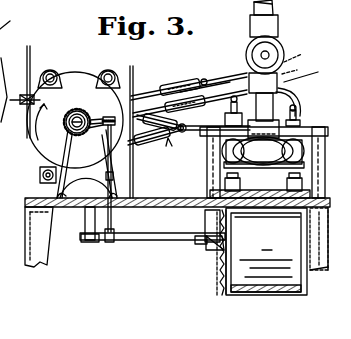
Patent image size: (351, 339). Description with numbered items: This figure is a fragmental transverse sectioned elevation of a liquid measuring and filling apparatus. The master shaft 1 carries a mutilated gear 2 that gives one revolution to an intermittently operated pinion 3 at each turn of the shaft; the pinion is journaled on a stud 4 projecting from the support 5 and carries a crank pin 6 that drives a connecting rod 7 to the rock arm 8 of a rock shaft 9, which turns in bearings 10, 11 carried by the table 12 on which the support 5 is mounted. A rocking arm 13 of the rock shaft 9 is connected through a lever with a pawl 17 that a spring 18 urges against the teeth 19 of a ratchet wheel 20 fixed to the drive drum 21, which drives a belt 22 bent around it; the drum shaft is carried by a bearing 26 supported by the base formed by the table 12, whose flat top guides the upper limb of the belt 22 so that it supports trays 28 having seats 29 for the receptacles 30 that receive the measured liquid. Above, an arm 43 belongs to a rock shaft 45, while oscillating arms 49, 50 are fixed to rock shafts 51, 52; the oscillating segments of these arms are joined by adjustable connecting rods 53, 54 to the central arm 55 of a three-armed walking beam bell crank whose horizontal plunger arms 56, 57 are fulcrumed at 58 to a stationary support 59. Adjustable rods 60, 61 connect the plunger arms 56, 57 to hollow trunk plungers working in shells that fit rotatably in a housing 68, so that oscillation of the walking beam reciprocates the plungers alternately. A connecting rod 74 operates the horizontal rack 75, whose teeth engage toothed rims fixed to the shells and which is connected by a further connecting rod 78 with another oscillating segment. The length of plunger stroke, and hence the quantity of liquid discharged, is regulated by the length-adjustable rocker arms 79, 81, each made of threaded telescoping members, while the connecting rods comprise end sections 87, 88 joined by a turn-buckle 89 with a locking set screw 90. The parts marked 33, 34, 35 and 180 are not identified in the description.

The master shaft 1 is at (69, 122).
The mutilated gear 2 is at (74, 109).
The intermittently operated pinion 3 is at (97, 118).
The stud 4 is at (93, 128).
The support 5 is at (104, 150).
The crank pin 6 is at (110, 117).
The connecting rod 7 is at (113, 168).
The rock arm 8 is at (115, 234).
The rock shaft 9 is at (146, 240).
The bearing 10 is at (90, 243).
The bearing 11 is at (205, 222).
The table 12 is at (336, 208).
The rocking arm 13 is at (200, 243).
The pawl 17 is at (220, 262).
The spring 18 is at (214, 250).
The teeth 19 is at (218, 282).
The ratchet wheel 20 is at (225, 294).
The drive drum 21 is at (267, 247).
The belt 22 is at (265, 296).
The bearing 26 is at (221, 216).
The tray 28 is at (211, 194).
The seat 29 is at (240, 185).
The receptacle 30 is at (333, 167).
The post 33 is at (140, 68).
The arrow 34 is at (34, 118).
The disk 35 is at (35, 137).
The arm 43 is at (55, 74).
The rock shaft 45 is at (50, 70).
The oscillating arm 49 is at (105, 70).
The oscillating arm 50 is at (42, 174).
The rock shaft 51 is at (108, 71).
The rock shaft 52 is at (40, 180).
The adjustable connecting rod 53 is at (250, 69).
The adjustable connecting rod 54 is at (235, 84).
The central arm 55 is at (283, 50).
The horizontal plunger arm 56 is at (227, 111).
The horizontal plunger arm 57 is at (290, 97).
The fulcrum 58 is at (303, 55).
The stationary support 59 is at (299, 73).
The adjustable rod 60 is at (216, 116).
The adjustable rod 61 is at (298, 118).
The housing 68 is at (320, 126).
The connecting rod 74 is at (184, 117).
The horizontal rack 75 is at (324, 128).
The connecting rod 78 is at (170, 150).
The rocker arm 79 is at (312, 70).
The rocker arm 81 is at (232, 157).
The end section 87 is at (166, 90).
The end section 88 is at (194, 86).
The turn-buckle 89 is at (164, 162).
The locking set screw 90 is at (199, 82).
The bearing 180 is at (304, 150).